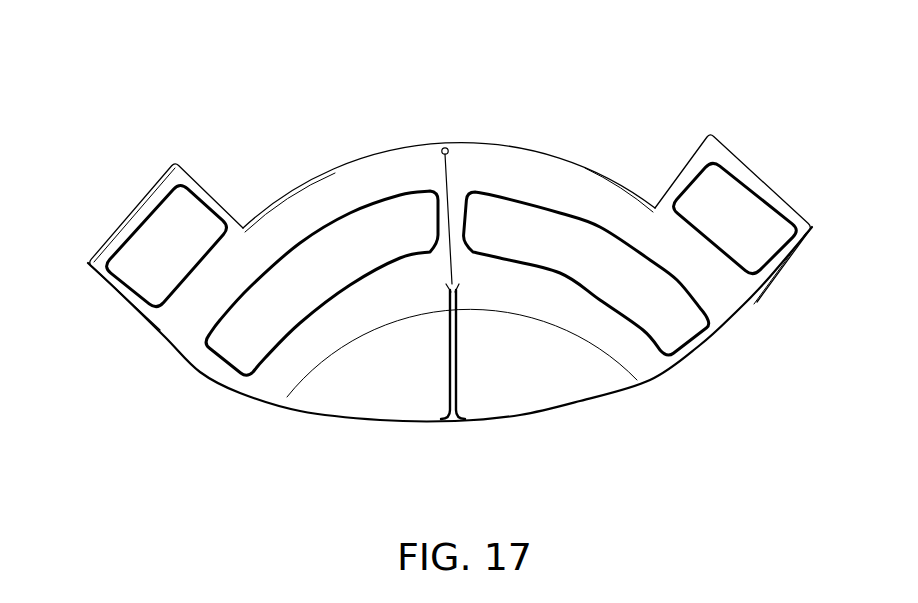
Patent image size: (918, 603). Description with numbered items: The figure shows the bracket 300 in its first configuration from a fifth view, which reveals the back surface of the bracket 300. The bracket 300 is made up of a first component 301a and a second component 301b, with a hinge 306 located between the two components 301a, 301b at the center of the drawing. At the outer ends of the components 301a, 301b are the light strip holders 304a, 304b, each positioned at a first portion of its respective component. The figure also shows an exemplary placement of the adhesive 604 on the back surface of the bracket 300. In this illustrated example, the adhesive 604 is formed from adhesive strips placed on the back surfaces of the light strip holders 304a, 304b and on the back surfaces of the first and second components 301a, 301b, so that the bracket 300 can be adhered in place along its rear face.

The bracket 300 is at (210, 66).
The first component 301a is at (318, 126).
The second component 301b is at (563, 127).
The light strip holder 304a is at (112, 186).
The light strip holder 304b is at (777, 146).
The hinge 306 is at (442, 127).
The adhesive 604 is at (172, 297).